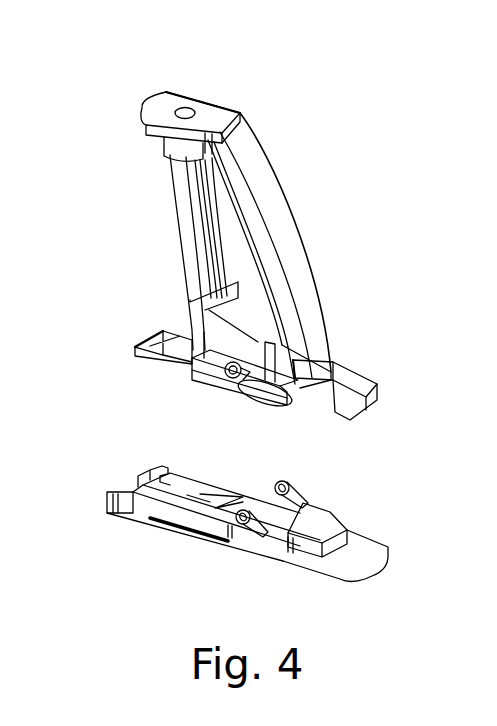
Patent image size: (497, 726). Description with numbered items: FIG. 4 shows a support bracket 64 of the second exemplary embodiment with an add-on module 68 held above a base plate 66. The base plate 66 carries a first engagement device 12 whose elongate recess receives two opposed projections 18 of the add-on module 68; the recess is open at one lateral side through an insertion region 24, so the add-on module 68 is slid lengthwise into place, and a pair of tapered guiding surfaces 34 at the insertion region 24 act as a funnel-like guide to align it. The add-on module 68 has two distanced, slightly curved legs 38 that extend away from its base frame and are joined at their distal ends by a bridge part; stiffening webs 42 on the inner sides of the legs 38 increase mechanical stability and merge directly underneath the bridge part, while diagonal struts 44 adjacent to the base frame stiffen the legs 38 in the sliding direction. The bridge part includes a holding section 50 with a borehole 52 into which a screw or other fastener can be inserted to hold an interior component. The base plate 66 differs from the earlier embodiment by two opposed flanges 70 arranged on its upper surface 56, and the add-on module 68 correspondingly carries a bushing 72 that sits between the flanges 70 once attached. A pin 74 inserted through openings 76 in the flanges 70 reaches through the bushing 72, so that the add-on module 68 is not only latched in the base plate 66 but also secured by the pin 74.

The first engagement device 12 is at (241, 527).
The projections 18 is at (284, 403).
The insertion region 24 is at (127, 477).
The tapered guiding surfaces 34 is at (142, 480).
The legs 38 is at (188, 268).
The stiffening webs 42 is at (193, 175).
The diagonal strut 44 is at (290, 338).
The holding section 50 is at (229, 90).
The borehole 52 is at (185, 106).
The upper surface 56 is at (325, 506).
The support bracket 64 is at (263, 239).
The base plate 66 is at (367, 548).
The add-on module 68 is at (334, 270).
The flanges 70 is at (303, 495).
The bushing 72 is at (263, 355).
The pin 74 is at (236, 384).
The openings 76 is at (283, 482).